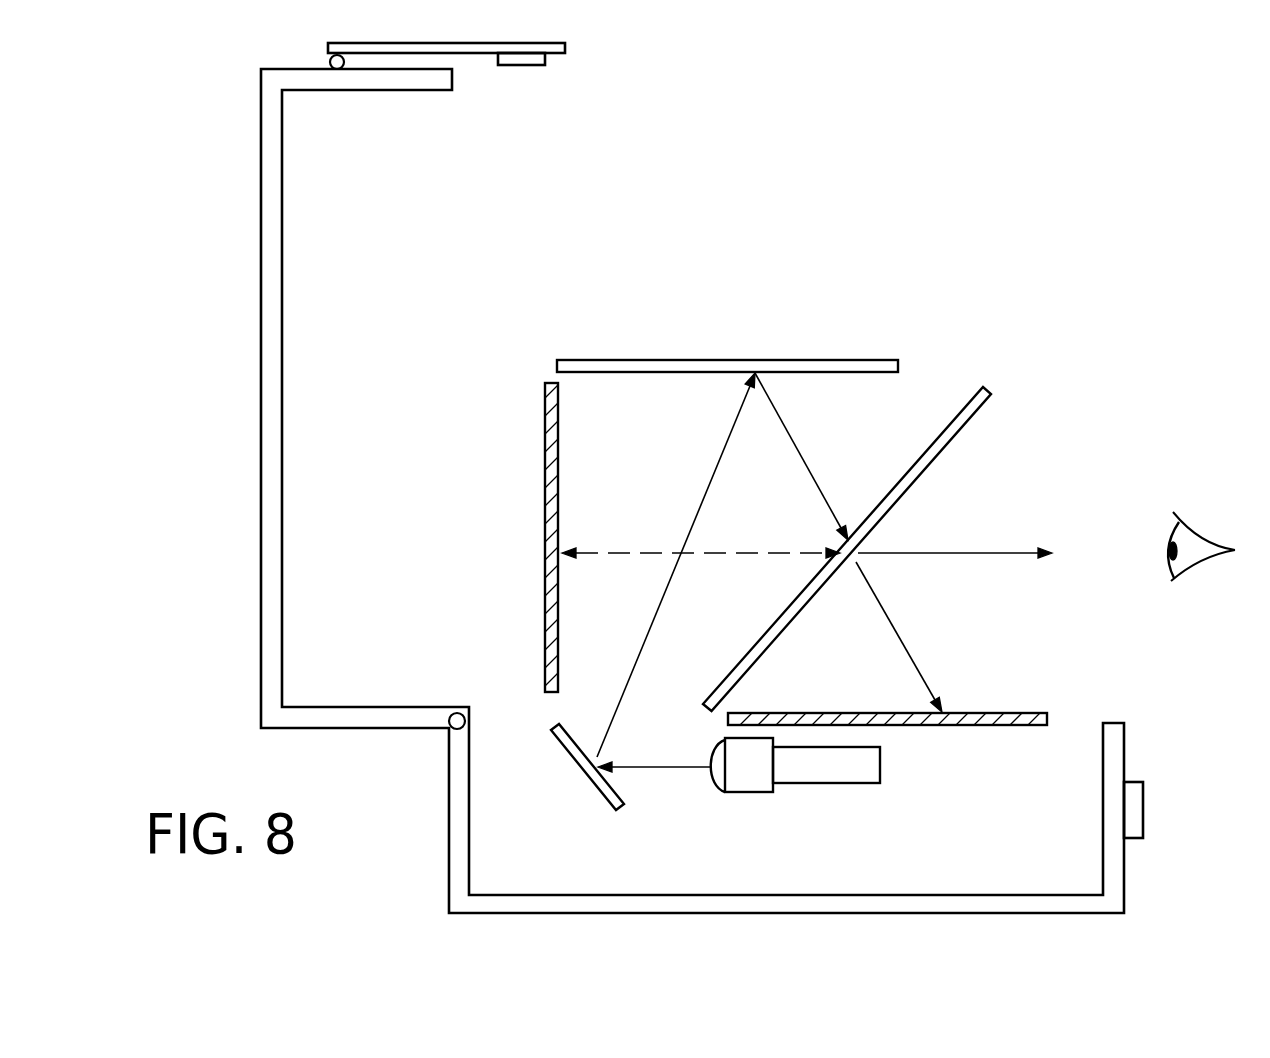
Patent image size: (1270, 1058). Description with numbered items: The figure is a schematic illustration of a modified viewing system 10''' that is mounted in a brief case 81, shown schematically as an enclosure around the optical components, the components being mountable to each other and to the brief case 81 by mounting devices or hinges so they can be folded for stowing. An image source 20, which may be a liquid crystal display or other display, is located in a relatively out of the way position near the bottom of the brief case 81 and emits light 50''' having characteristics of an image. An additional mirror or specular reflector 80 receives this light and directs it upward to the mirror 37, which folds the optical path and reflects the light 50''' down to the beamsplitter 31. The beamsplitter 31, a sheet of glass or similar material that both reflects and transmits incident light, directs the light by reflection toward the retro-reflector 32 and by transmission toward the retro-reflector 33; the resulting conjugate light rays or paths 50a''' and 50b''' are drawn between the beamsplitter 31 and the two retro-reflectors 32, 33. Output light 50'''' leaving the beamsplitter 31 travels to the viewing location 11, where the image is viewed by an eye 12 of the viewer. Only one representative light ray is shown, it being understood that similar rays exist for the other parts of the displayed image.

The viewing system 10''' is at (1046, 308).
The viewing location 11 is at (1136, 524).
The eye 12 is at (1195, 533).
The image source 20 is at (742, 793).
The beamsplitter 31 is at (955, 440).
The retro-reflector 32 is at (560, 437).
The retro-reflector 33 is at (1020, 770).
The mirror 37 is at (687, 360).
The light 50''' is at (720, 565).
The conjugate light path 50a''' is at (701, 523).
The conjugate light path 50b''' is at (934, 637).
The output light 50'''' is at (955, 518).
The mirror 80 is at (572, 757).
The brief case 81 is at (283, 258).